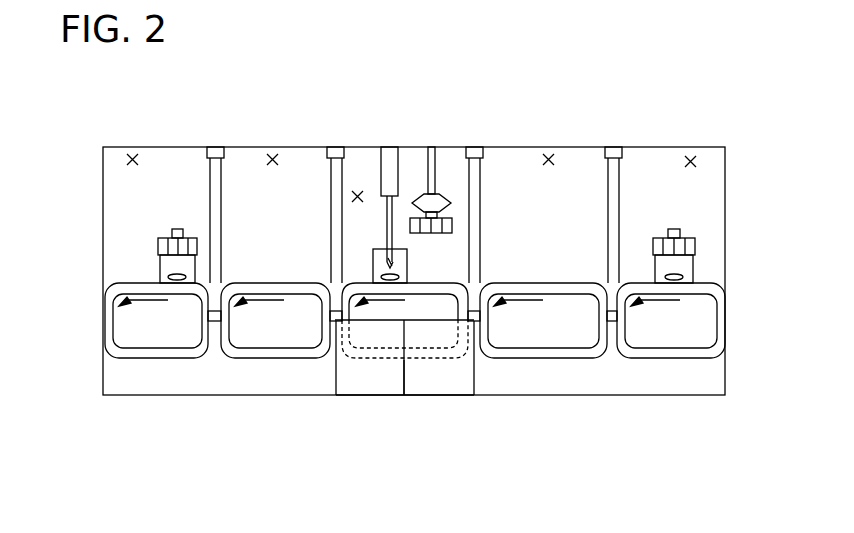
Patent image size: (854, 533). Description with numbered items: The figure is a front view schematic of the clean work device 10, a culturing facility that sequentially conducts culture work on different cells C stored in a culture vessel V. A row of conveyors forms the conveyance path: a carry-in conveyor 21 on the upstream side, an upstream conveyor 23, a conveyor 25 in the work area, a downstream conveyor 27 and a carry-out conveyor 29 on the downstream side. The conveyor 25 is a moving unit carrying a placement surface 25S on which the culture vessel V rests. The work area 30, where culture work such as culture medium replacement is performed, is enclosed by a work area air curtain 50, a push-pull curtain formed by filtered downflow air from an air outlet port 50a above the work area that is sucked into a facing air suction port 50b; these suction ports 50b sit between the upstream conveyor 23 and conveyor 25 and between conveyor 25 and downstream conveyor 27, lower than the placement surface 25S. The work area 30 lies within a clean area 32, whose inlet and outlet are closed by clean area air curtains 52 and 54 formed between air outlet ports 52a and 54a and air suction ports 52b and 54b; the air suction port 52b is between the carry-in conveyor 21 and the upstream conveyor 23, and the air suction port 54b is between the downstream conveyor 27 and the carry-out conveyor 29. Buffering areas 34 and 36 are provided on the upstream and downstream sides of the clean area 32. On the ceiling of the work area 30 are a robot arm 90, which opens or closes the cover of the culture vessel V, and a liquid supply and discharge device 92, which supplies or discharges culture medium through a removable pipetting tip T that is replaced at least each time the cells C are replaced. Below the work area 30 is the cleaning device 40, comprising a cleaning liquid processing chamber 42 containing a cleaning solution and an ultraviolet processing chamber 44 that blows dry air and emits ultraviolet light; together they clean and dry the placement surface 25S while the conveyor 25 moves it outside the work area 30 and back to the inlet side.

The clean work device 10 is at (683, 96).
The buffering area 36 is at (133, 158).
The clean area 32 is at (272, 158).
The buffering area 34 is at (691, 160).
The work area 30 is at (357, 192).
The clean area air curtain 54 is at (216, 192).
The air outlet port 54a is at (214, 148).
The air suction port 54b is at (215, 322).
The work area air curtain 50 is at (334, 190).
The air outlet port 50a is at (337, 148).
The air suction port 50b is at (334, 322).
The clean area air curtain 52 is at (615, 190).
The air outlet port 52a is at (613, 150).
The air suction port 52b is at (616, 322).
The carry-out conveyor 29 is at (143, 358).
The downstream conveyor 27 is at (258, 358).
The conveyor in the work area 25 is at (447, 358).
The upstream conveyor 23 is at (575, 358).
The carry-in conveyor 21 is at (697, 358).
The cleaning liquid processing chamber 42 is at (390, 380).
The ultraviolet processing chamber 44 is at (428, 380).
The cleaning device 40 is at (433, 440).
The culture vessel V is at (697, 245).
The cells C is at (682, 270).
The placement surface 25S is at (412, 283).
The liquid supply and discharge device 92 is at (392, 165).
The tip T is at (386, 212).
The robot arm 90 is at (433, 160).